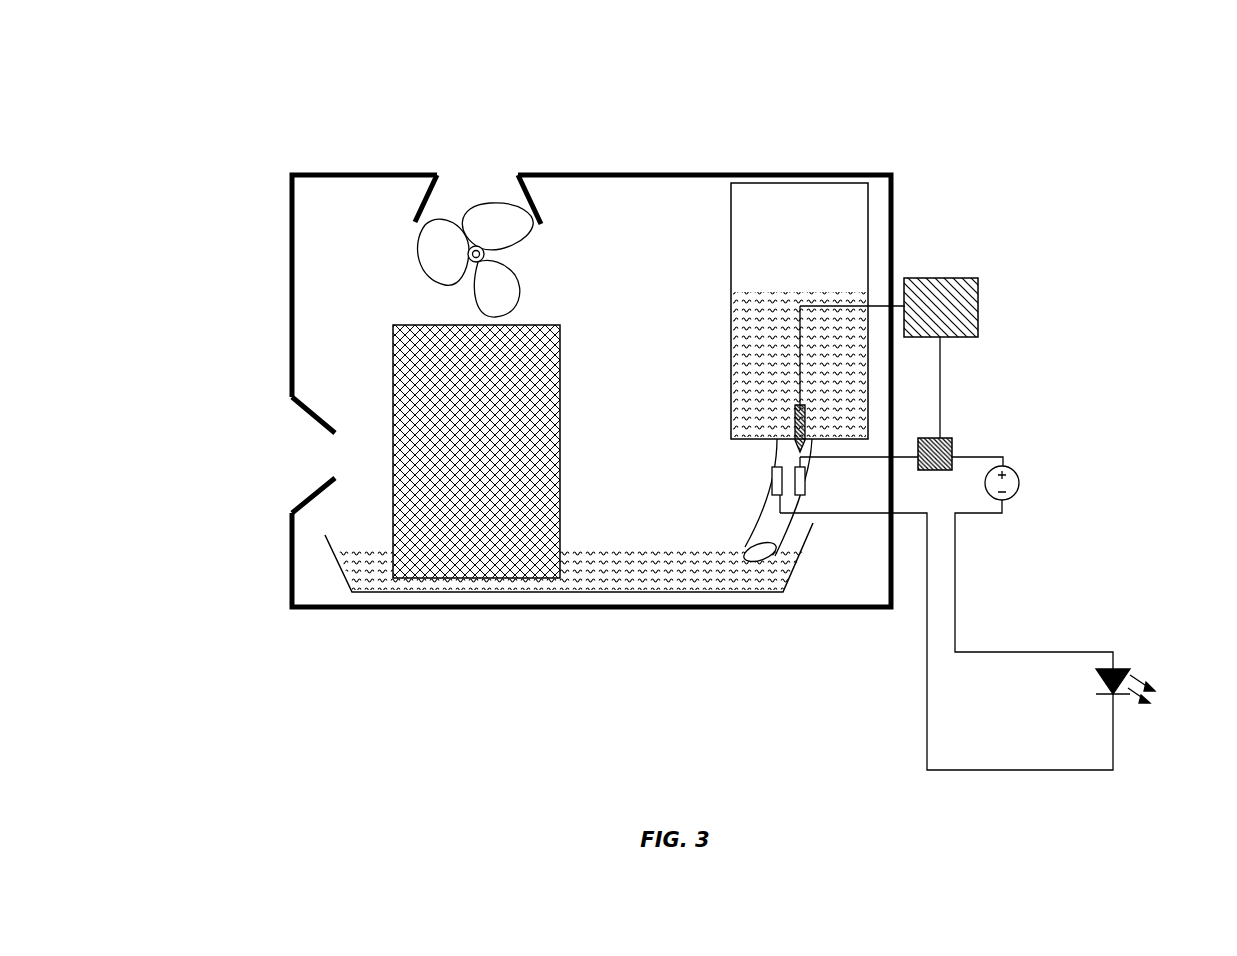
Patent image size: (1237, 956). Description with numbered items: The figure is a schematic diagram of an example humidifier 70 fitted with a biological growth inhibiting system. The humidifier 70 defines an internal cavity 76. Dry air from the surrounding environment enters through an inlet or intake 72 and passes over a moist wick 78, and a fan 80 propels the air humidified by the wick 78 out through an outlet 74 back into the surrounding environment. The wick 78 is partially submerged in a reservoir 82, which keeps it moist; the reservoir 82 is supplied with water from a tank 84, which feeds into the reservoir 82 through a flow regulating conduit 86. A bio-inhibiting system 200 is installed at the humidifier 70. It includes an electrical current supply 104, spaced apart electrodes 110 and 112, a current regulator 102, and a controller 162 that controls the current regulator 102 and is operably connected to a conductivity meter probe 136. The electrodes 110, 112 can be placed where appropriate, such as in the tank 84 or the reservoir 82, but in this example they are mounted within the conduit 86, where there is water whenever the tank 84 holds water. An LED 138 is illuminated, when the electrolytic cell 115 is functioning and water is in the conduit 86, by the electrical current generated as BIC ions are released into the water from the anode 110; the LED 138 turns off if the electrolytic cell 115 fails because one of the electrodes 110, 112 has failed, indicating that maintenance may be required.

The humidifier 70 is at (877, 88).
The outlet 74 is at (508, 118).
The inlet or intake 72 is at (258, 463).
The internal cavity 76 is at (630, 258).
The fan 80 is at (397, 285).
The wick 78 is at (560, 475).
The reservoir 82 is at (644, 565).
The tank 84 is at (840, 262).
The flow regulating conduit 86 is at (773, 525).
The conductivity meter probe 136 is at (795, 430).
The electrode 112 is at (772, 475).
The electrode (anode) 110 is at (806, 482).
The bio-inhibiting system 200 is at (1112, 420).
The controller 162 is at (978, 295).
The current regulator 102 is at (920, 441).
The electrolytic cell 115 is at (984, 430).
The electrical current supply 104 is at (1020, 487).
The LED 138 is at (1115, 668).